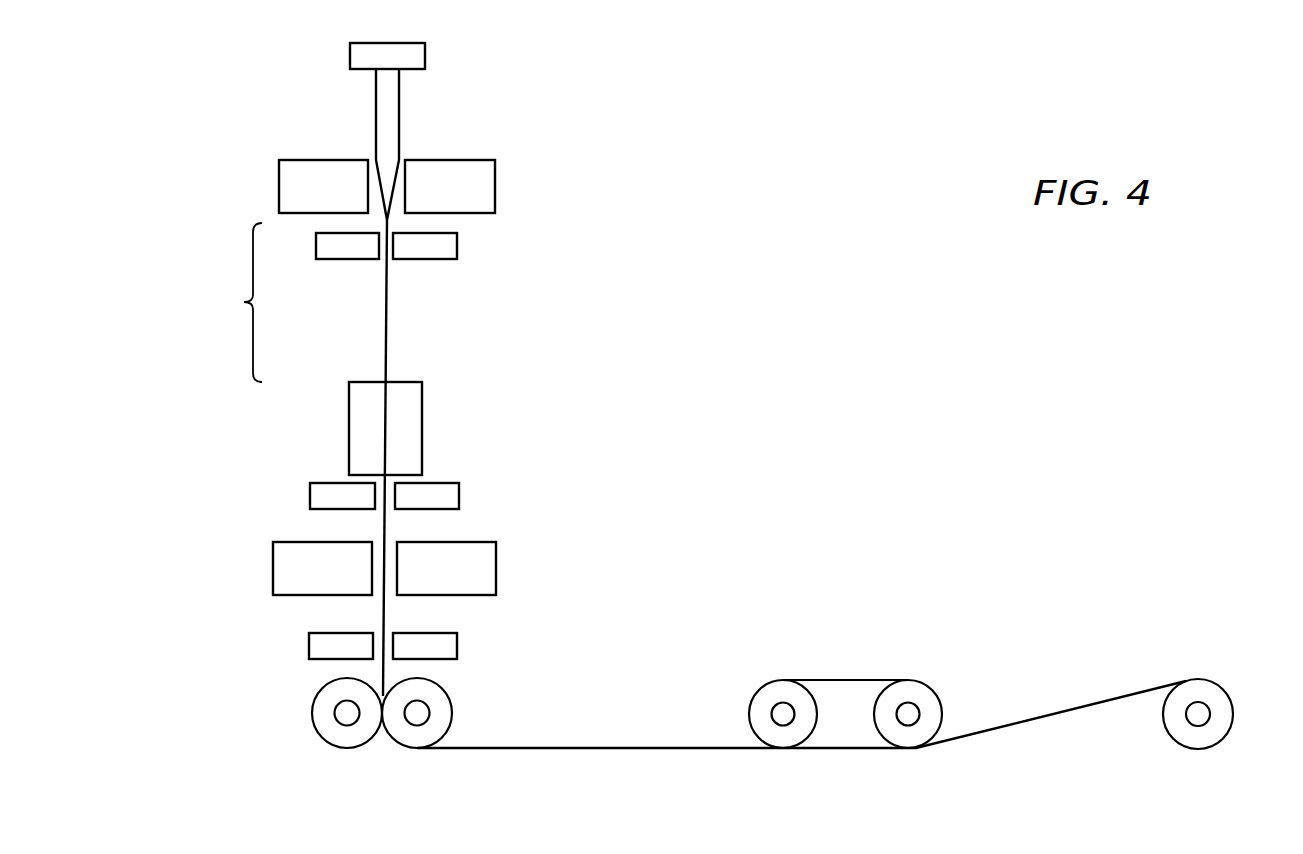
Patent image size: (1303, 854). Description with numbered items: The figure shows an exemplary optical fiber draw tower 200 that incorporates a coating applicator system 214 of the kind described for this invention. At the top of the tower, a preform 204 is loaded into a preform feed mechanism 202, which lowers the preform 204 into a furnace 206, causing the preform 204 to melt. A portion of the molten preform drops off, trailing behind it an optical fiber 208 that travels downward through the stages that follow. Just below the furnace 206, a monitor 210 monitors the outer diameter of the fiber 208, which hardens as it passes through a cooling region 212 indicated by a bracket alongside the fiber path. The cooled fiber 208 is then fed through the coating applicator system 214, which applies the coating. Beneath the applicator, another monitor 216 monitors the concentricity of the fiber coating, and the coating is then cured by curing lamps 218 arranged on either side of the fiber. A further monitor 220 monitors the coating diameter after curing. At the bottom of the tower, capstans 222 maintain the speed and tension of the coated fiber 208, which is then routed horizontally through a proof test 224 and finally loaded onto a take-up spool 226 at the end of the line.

The optical fiber draw tower 200 is at (666, 68).
The preform feed mechanism 202 is at (425, 56).
The preform 204 is at (400, 117).
The furnace 206 is at (495, 187).
The optical fiber 208 is at (388, 313).
The monitor 210 is at (457, 246).
The cooling region 212 is at (232, 302).
The coating applicator system 214 is at (422, 430).
The monitor 216 is at (459, 496).
The curing lamps 218 is at (496, 570).
The monitor 220 is at (457, 646).
The capstans 222 is at (327, 740).
The proof test 224 is at (749, 715).
The take-up spool 226 is at (1227, 737).